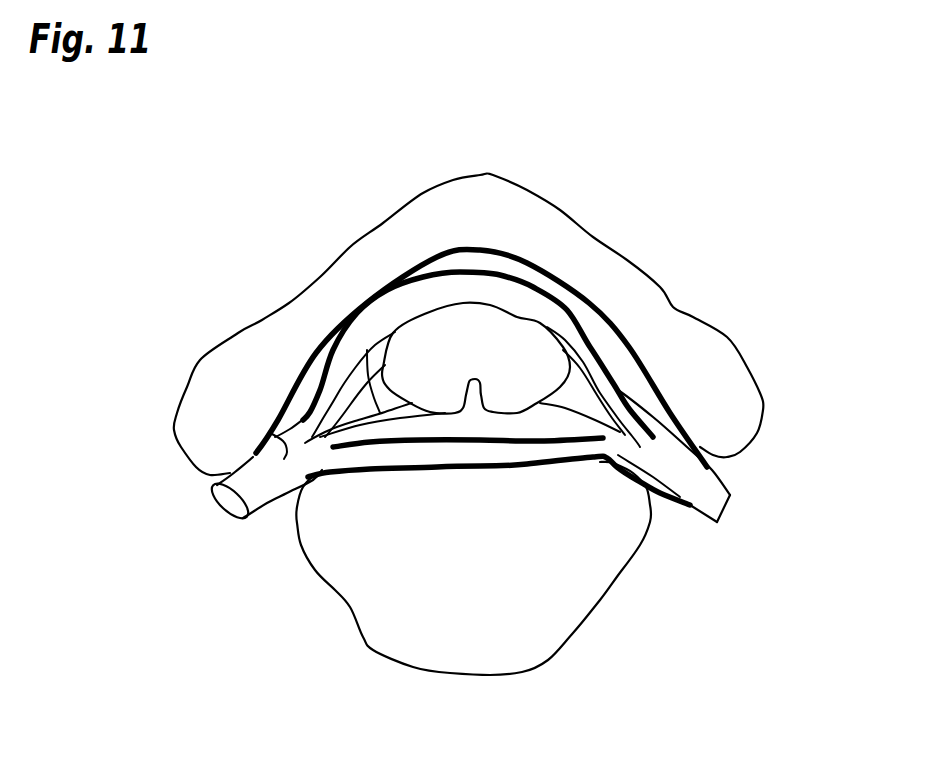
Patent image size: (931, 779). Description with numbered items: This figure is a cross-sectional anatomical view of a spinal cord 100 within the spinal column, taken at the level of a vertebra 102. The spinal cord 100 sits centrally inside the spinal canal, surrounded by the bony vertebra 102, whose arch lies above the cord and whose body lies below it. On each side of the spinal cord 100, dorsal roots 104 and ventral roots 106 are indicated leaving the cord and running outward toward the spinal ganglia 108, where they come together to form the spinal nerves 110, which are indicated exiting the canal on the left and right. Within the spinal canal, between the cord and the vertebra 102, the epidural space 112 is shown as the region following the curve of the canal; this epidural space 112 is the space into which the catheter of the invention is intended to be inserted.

The spinal cord 100 is at (510, 327).
The vertebra 102 is at (667, 313).
The dorsal roots 104 is at (367, 352).
The ventral roots 106 is at (370, 407).
The spinal ganglia 108 is at (275, 437).
The spinal nerves 110 is at (210, 514).
The epidural space 112 is at (462, 258).